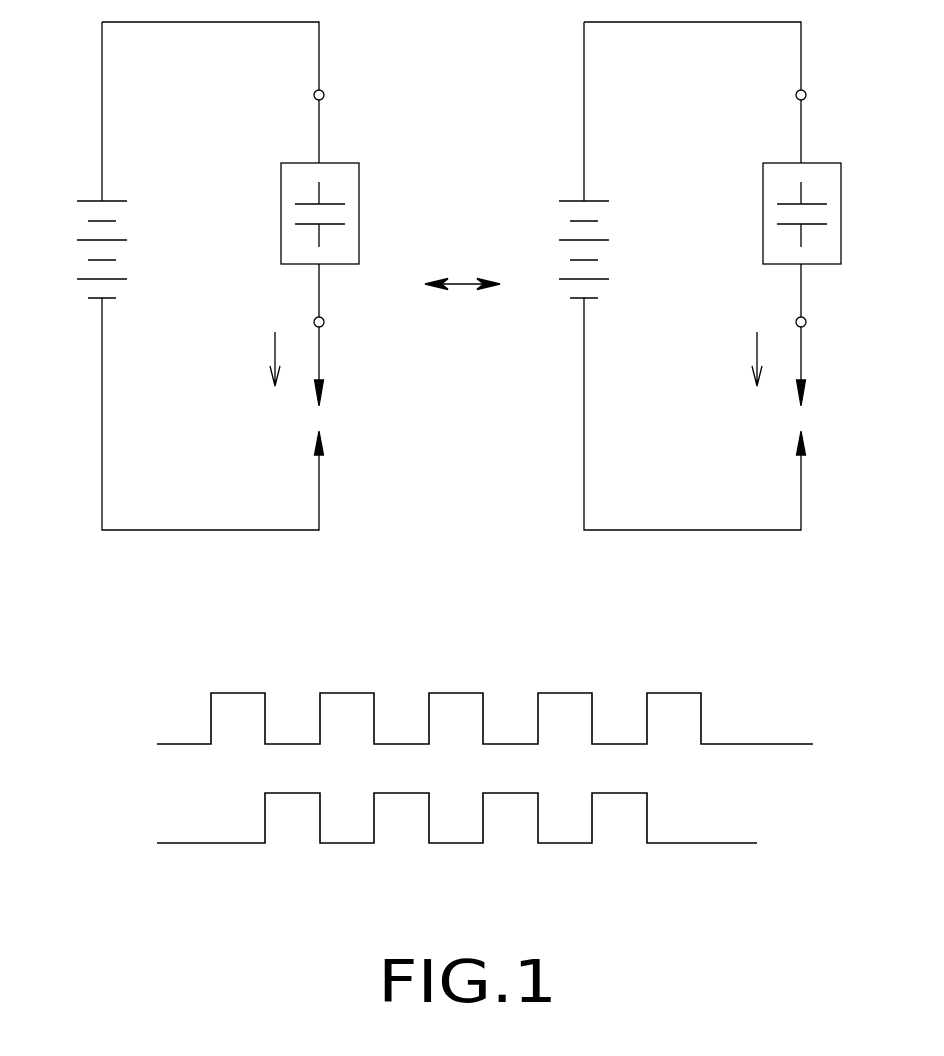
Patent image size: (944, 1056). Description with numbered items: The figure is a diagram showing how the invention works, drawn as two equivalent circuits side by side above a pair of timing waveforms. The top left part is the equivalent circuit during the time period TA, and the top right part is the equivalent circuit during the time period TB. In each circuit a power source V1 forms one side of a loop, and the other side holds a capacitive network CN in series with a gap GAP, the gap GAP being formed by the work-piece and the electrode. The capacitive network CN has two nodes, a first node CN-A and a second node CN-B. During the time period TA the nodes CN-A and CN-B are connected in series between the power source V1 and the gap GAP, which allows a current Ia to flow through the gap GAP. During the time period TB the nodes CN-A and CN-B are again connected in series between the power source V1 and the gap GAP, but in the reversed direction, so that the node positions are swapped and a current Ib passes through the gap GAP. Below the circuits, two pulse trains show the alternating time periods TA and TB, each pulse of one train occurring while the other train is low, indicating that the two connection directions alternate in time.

The power source V1 is at (91, 203).
The capacitive network CN is at (281, 213).
The first node of capacitive network CN-A is at (326, 91).
The second node of capacitive network CN-B is at (326, 318).
The gap GAP is at (320, 419).
The current Ia is at (253, 357).
The current Ib is at (735, 357).
The time period TA is at (485, 650).
The time period TB is at (457, 700).